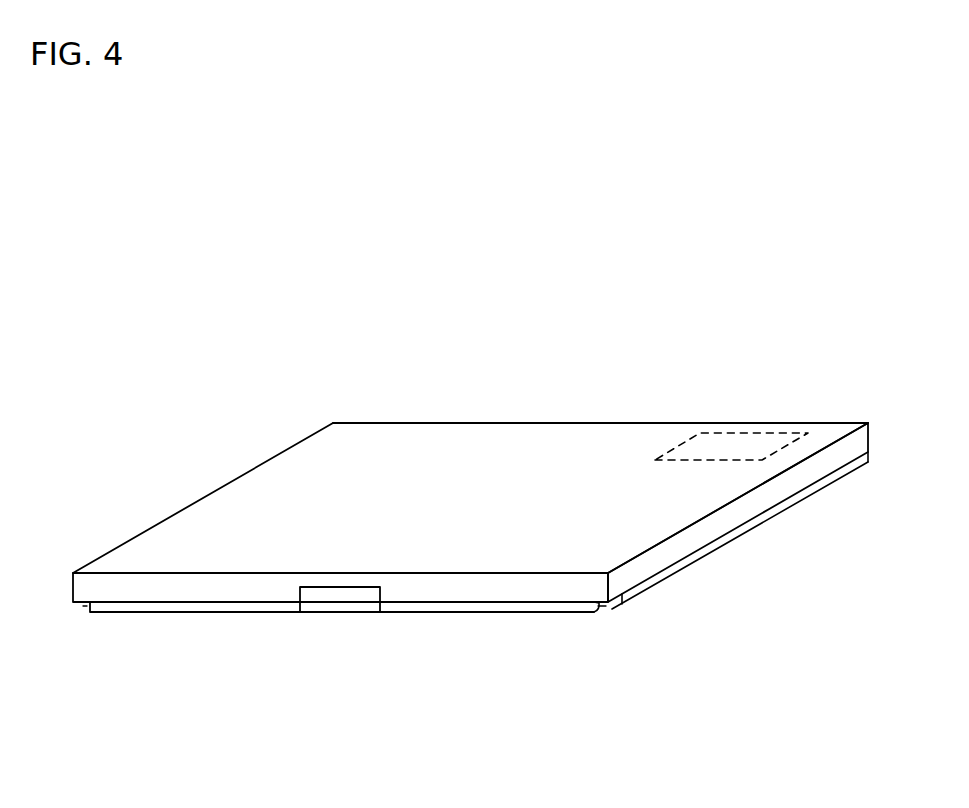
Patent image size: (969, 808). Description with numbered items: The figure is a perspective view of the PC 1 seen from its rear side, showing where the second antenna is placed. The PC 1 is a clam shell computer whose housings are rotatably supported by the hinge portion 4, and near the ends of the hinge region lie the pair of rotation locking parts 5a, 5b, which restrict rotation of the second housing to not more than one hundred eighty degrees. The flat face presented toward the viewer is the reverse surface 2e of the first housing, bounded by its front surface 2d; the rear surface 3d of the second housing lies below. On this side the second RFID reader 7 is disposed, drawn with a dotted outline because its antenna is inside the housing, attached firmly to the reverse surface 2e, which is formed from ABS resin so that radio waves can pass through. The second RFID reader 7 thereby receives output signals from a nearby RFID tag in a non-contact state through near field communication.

The PC 1 is at (197, 322).
The reverse surface 2e is at (470, 468).
The front surface 2d is at (600, 387).
The second RFID reader 7 is at (731, 399).
The rear surface 3d is at (479, 580).
The hinge portion 4 is at (323, 638).
The rotation locking part 5a is at (55, 642).
The rotation locking part 5b is at (581, 647).